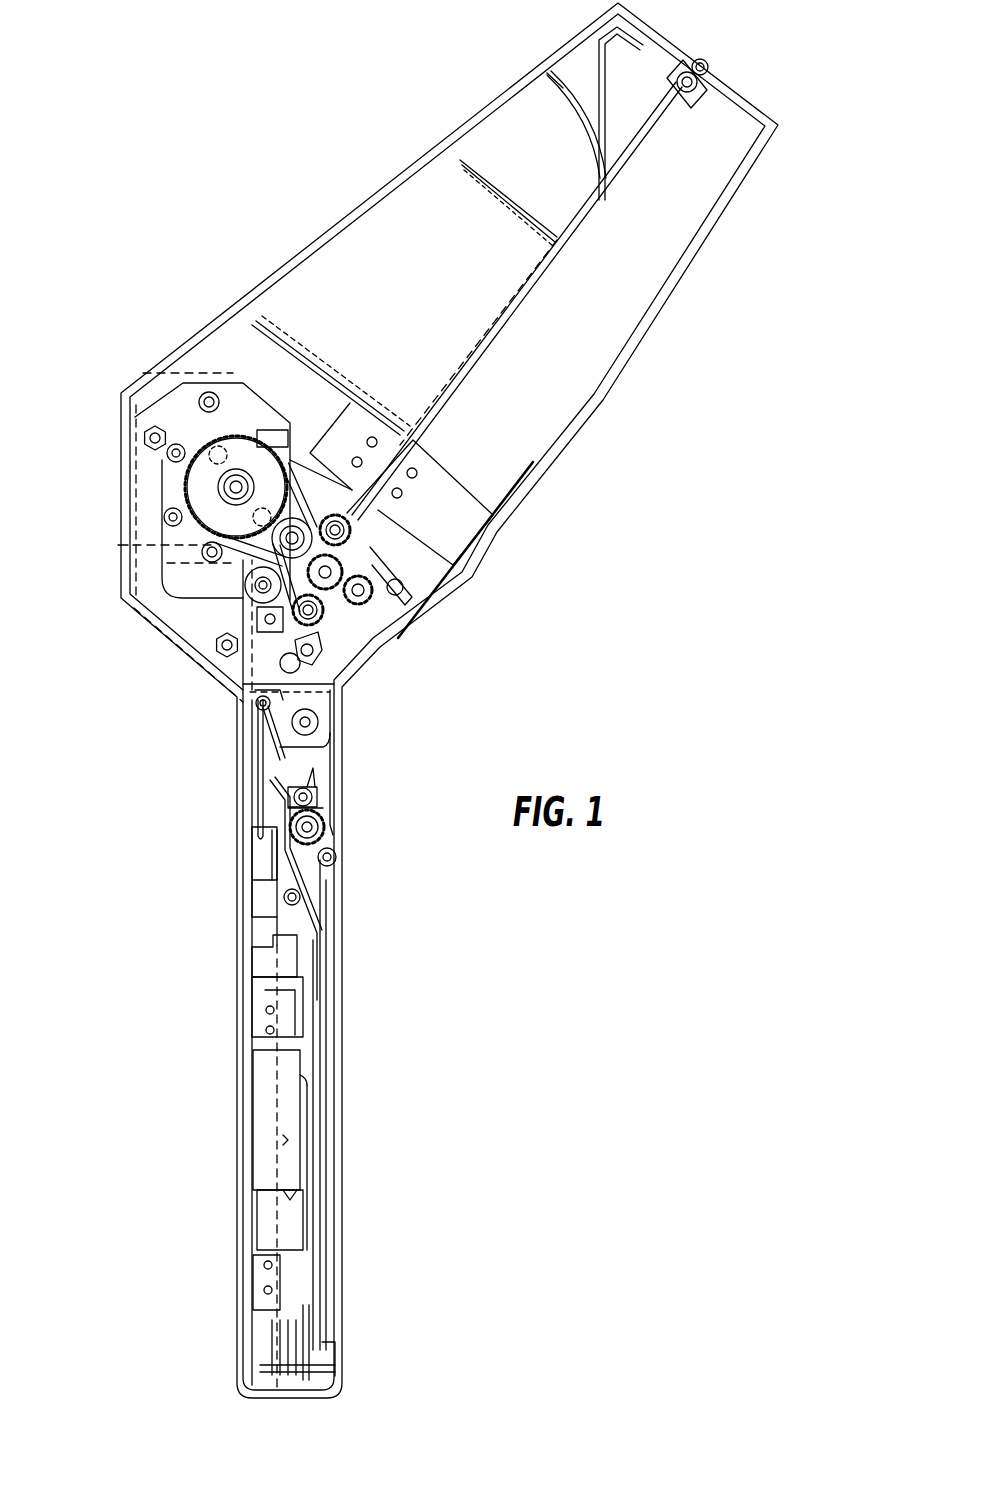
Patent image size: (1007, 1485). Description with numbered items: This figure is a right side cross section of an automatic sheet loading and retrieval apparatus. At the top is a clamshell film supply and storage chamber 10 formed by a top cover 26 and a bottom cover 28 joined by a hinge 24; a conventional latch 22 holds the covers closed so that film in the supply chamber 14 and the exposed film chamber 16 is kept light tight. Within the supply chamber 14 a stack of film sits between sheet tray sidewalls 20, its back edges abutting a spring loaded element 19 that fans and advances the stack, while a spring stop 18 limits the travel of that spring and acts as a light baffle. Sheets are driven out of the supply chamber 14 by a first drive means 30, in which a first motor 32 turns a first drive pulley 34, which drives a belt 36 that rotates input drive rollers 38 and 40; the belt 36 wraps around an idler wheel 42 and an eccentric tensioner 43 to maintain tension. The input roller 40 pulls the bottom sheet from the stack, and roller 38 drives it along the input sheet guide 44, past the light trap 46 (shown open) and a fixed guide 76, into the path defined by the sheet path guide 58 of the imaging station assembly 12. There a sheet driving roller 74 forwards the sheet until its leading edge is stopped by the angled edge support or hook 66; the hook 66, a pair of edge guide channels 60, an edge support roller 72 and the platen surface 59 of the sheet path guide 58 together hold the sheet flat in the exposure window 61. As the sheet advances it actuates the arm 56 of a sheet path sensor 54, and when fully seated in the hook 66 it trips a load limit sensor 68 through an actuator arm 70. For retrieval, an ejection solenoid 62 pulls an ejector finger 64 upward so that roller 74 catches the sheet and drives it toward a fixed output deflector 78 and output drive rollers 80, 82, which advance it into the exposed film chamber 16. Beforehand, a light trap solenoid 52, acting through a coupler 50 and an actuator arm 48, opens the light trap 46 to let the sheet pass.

The clamshell film supply and storage chamber 10 is at (363, 192).
The imaging station assembly 12 is at (372, 1152).
The supply chamber 14 is at (533, 108).
The exposed film chamber 16 is at (565, 358).
The spring stop 18 is at (597, 90).
The spring loaded element 19 is at (575, 120).
The sheet tray sidewalls 20 is at (503, 192).
The latch 22 is at (477, 520).
The hinge 24 is at (700, 60).
The top cover 26 is at (313, 240).
The bottom cover 28 is at (640, 332).
The first drive means 30 is at (217, 607).
The first motor 32 is at (187, 537).
The first drive pulley 34 is at (205, 458).
The belt 36 is at (222, 562).
The input drive roller 38 is at (343, 650).
The input roller 40 is at (372, 528).
The idler wheel 42 is at (292, 518).
The eccentric tensioner 43 is at (237, 603).
The input sheet guide 44 is at (258, 672).
The light trap 46 is at (330, 737).
The actuator arm 48 is at (258, 774).
The coupler 50 is at (258, 861).
The light trap solenoid 52 is at (258, 953).
The sheet path sensor 54 is at (260, 1043).
The arm 56 is at (320, 1090).
The sheet path guide 58 is at (315, 918).
The platen surface 59 is at (318, 1210).
The edge guide channels 60 is at (330, 1177).
The exposure window 61 is at (338, 1010).
The ejection solenoid 62 is at (265, 1218).
The ejector finger 64 is at (315, 1370).
The angled edge support 66 is at (340, 1357).
The load limit sensor 68 is at (263, 1280).
The actuator arm 70 is at (330, 1338).
The edge support roller 72 is at (340, 860).
The sheet driving roller 74 is at (335, 838).
The fixed guide 76 is at (315, 778).
The fixed output deflector 78 is at (340, 690).
The output drive roller 80 is at (378, 605).
The output drive roller 82 is at (375, 620).